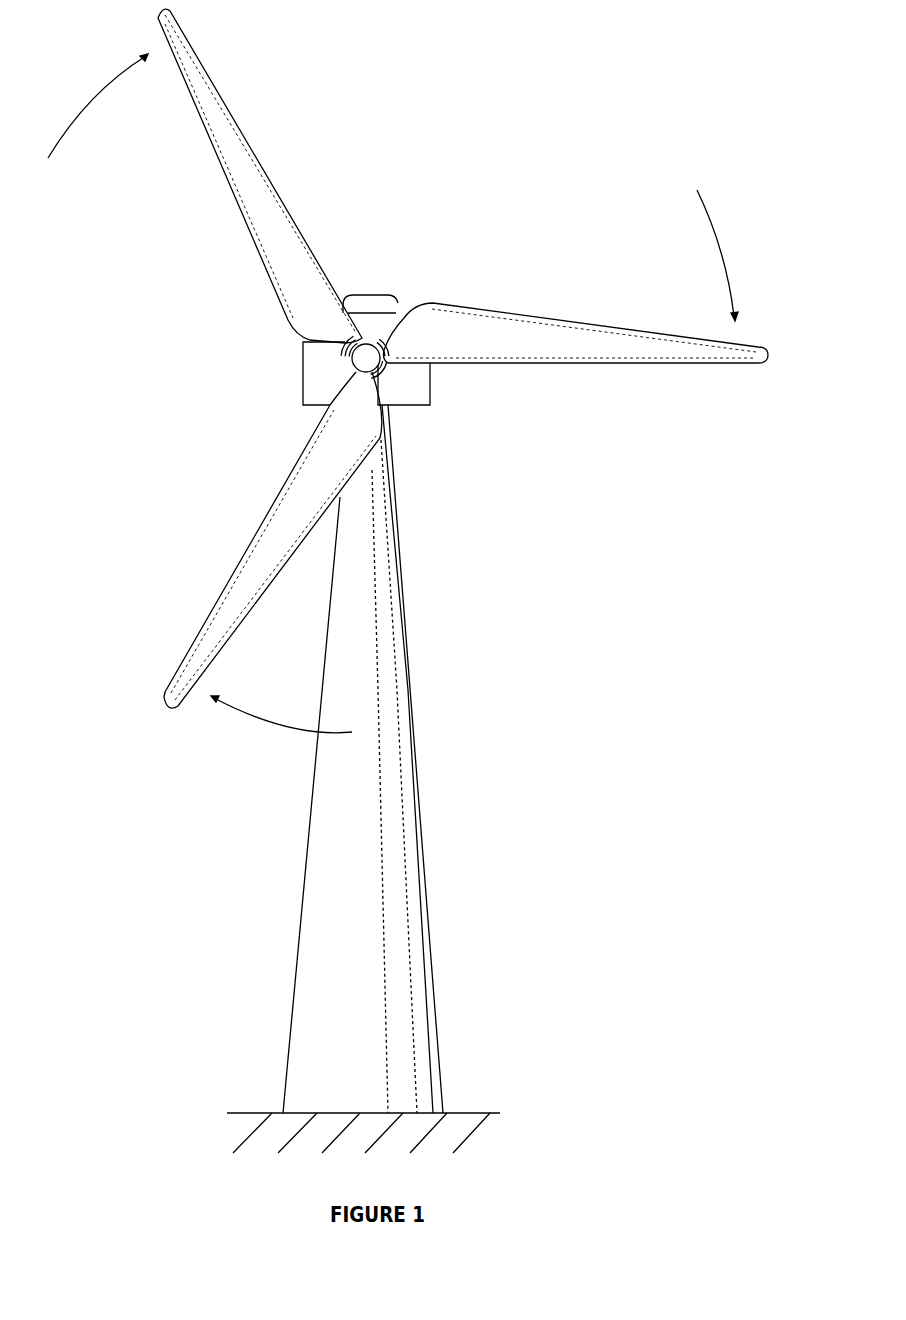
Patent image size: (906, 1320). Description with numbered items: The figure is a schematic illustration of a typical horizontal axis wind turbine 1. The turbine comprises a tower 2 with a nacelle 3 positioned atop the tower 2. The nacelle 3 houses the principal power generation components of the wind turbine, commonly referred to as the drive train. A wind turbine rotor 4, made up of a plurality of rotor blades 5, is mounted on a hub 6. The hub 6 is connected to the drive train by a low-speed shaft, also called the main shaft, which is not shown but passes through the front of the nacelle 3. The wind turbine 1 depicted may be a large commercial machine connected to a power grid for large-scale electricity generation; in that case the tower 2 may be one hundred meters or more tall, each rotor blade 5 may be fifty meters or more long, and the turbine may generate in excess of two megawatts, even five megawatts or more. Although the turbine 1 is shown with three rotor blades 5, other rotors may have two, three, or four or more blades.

The horizontal axis wind turbine 1 is at (556, 862).
The tower 2 is at (413, 768).
The nacelle 3 is at (424, 387).
The wind turbine rotor 4 is at (464, 180).
The rotor blade 5 is at (681, 338).
The hub 6 is at (380, 328).